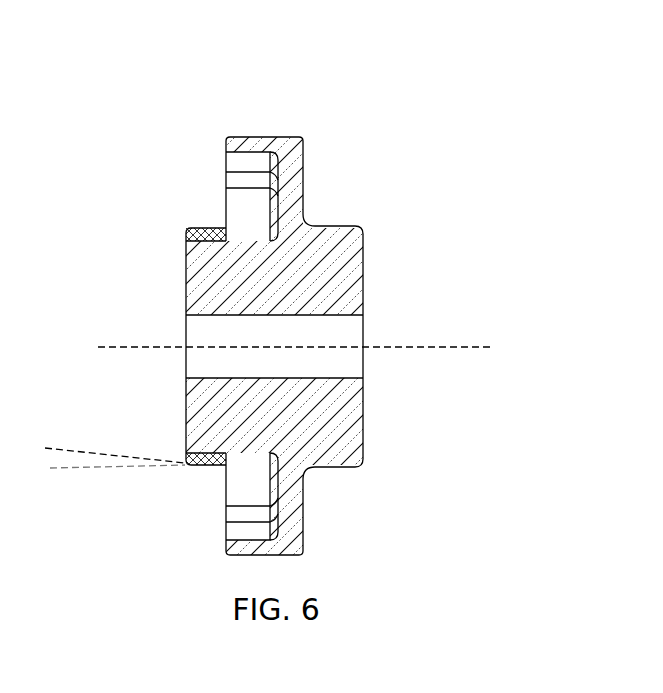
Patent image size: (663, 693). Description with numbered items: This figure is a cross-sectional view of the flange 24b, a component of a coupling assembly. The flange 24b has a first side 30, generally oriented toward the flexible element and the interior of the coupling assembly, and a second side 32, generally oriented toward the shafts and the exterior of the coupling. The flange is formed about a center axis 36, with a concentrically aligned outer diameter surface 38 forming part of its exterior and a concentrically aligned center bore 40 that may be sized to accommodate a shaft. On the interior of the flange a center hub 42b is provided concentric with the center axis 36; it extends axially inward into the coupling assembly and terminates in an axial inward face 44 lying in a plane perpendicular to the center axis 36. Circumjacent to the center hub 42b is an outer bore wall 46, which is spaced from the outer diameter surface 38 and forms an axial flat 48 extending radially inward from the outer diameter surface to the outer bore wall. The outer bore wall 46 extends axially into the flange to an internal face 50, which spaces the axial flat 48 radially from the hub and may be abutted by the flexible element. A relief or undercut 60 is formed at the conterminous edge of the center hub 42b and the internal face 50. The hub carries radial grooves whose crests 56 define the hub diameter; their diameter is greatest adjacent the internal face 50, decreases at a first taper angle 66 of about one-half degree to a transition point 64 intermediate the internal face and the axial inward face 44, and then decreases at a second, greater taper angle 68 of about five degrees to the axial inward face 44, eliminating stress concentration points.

The flange 24b is at (296, 103).
The first side 30 is at (186, 302).
The second side 32 is at (363, 290).
The center axis 36 is at (103, 345).
The outer diameter surface 38 is at (268, 137).
The center bore 40 is at (363, 317).
The center hub 42b is at (190, 244).
The axial inward face 44 is at (203, 434).
The outer bore wall 46 is at (226, 152).
The axial flat 48 is at (226, 142).
The internal face 50 is at (278, 210).
The crests 56 is at (196, 231).
The relief or undercut 60 is at (303, 222).
The transition point 64 is at (197, 268).
The first taper angle 66 is at (185, 464).
The second taper angle 68 is at (62, 452).